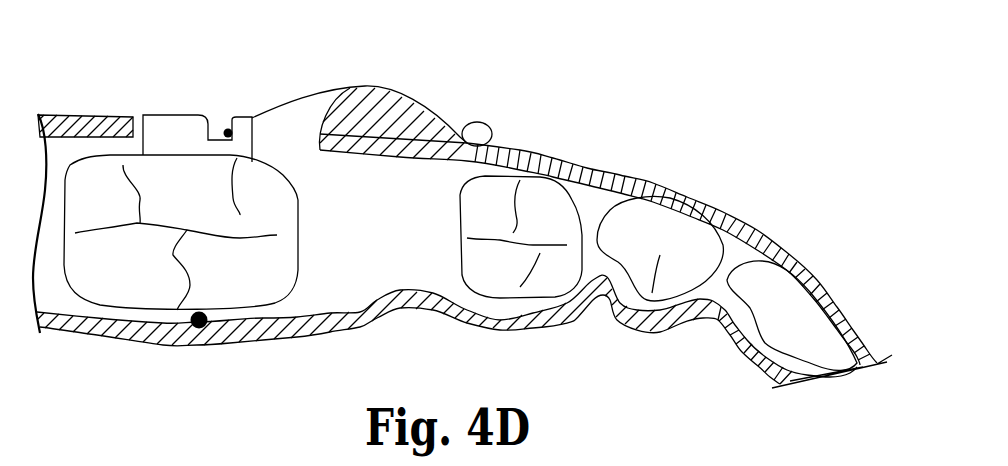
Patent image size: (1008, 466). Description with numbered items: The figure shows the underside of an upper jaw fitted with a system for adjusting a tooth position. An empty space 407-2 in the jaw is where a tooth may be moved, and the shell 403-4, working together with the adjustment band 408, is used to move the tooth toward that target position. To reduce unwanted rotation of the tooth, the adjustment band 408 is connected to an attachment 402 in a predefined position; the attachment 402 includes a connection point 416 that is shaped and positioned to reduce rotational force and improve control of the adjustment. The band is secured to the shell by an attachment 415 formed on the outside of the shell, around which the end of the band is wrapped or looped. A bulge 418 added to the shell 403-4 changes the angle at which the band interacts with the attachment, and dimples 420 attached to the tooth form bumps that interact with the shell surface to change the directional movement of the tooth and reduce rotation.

The attachment 402 is at (158, 114).
The connection point 416 is at (222, 109).
The adjustment band 408 is at (333, 92).
The bulge 418 is at (436, 104).
The attachment 415 is at (484, 123).
The shell 403-4 is at (636, 173).
The empty space 407-2 is at (373, 248).
The dimples 420 is at (194, 328).